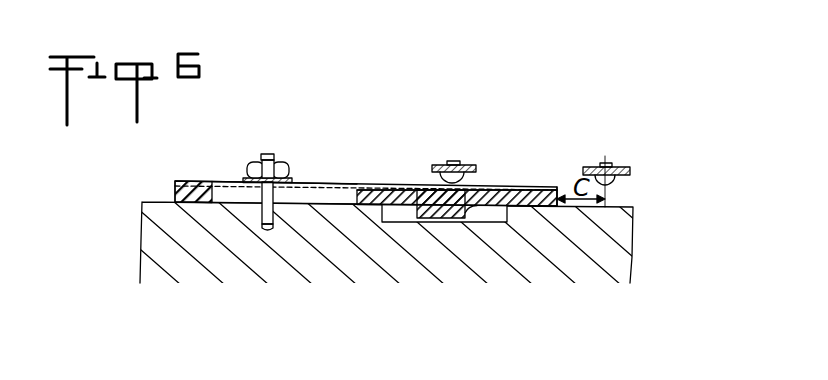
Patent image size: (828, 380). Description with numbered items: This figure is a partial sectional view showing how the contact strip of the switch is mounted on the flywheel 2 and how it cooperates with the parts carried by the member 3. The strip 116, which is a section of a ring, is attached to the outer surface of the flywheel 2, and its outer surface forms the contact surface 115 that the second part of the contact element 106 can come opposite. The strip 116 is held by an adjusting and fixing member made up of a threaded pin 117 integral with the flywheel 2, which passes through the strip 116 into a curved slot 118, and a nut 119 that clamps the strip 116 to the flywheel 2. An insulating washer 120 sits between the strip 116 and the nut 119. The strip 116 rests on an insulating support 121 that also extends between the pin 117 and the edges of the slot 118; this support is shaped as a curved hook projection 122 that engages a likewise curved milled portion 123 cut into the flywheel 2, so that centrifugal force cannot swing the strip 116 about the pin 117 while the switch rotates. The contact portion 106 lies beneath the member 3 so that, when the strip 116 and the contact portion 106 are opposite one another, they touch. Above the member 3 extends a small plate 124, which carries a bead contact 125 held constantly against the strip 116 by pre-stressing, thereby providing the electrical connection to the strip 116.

The flywheel 2 is at (143, 242).
The member 3 is at (634, 170).
The second part of the contact element 106 is at (612, 182).
The contact surface 115 is at (197, 178).
The strip 116 is at (522, 188).
The threaded pin 117 is at (272, 192).
The curved slot 118 is at (356, 185).
The nut 119 is at (291, 178).
The insulating washer 120 is at (243, 179).
The insulating support 121 is at (550, 187).
The curved hook projection 122 is at (483, 188).
The milled portion 123 is at (492, 218).
The small plate 124 is at (439, 164).
The bead contact 125 is at (443, 181).